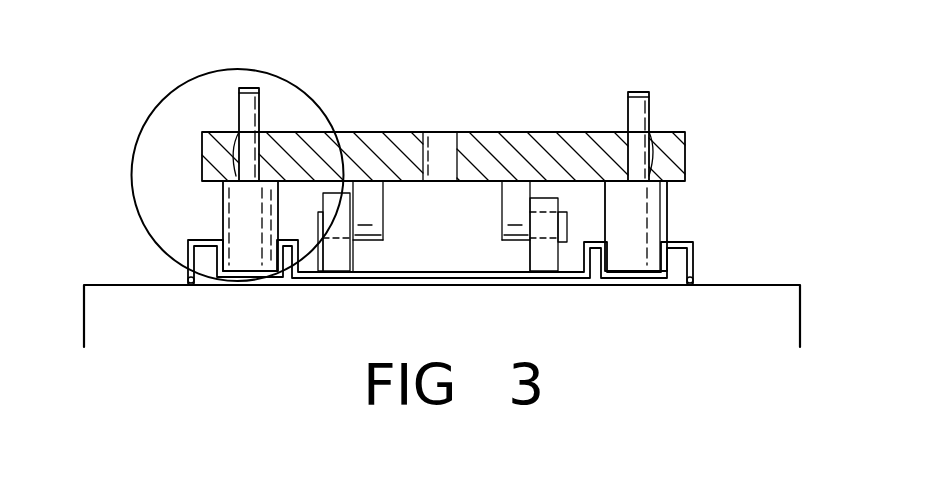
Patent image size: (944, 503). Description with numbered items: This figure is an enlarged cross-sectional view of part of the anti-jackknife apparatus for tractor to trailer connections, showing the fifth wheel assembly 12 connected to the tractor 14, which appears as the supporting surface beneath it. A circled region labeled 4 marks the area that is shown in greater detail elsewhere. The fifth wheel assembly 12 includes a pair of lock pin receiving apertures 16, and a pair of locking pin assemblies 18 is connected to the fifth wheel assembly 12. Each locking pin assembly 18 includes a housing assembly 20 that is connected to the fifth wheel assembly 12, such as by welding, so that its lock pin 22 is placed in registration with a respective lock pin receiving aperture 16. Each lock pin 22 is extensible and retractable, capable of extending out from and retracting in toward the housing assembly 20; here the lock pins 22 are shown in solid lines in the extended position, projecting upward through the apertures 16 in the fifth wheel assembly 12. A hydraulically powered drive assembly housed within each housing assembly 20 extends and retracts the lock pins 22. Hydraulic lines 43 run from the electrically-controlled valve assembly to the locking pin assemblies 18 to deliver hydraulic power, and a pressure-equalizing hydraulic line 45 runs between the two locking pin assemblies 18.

The detail view circle (FIG. 4 region) 4 is at (133, 154).
The fifth wheel assembly 12 is at (518, 127).
The tractor 14 is at (763, 320).
The lock pin receiving aperture 16 is at (243, 133).
The locking pin assembly 18 is at (198, 220).
The housing assembly 20 is at (235, 197).
The lock pin 22 is at (247, 108).
The hydraulic line 43 is at (192, 267).
The pressure-equalizing hydraulic line 45 is at (442, 226).